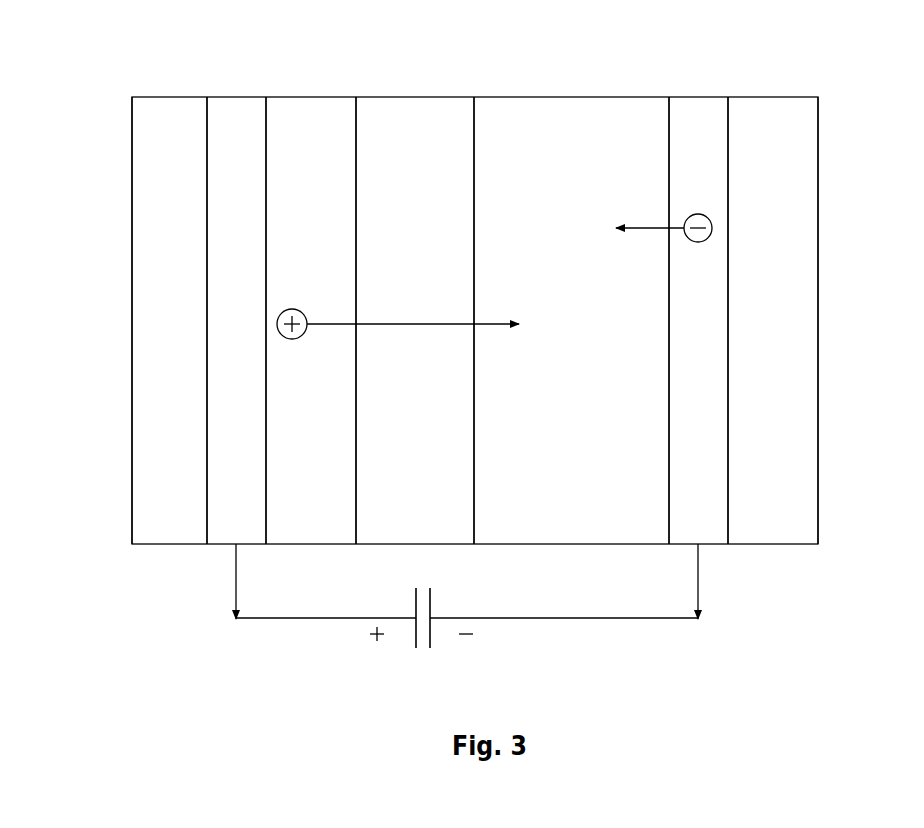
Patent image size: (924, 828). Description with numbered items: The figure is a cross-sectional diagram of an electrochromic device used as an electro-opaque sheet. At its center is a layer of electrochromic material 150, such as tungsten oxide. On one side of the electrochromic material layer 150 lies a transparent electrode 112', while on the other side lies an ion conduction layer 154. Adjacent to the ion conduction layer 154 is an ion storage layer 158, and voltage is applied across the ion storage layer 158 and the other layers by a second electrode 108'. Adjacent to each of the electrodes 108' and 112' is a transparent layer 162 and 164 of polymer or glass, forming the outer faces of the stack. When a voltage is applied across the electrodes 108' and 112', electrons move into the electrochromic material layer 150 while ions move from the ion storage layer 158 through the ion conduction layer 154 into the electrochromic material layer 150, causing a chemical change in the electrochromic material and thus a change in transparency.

The transparent layer 162 is at (162, 127).
The second electrode 108' is at (271, 285).
The ion storage layer 158 is at (295, 115).
The ion conduction layer 154 is at (415, 127).
The electrochromic material layer 150 is at (578, 127).
The transparent electrode 112' is at (740, 284).
The transparent layer 164 is at (787, 108).